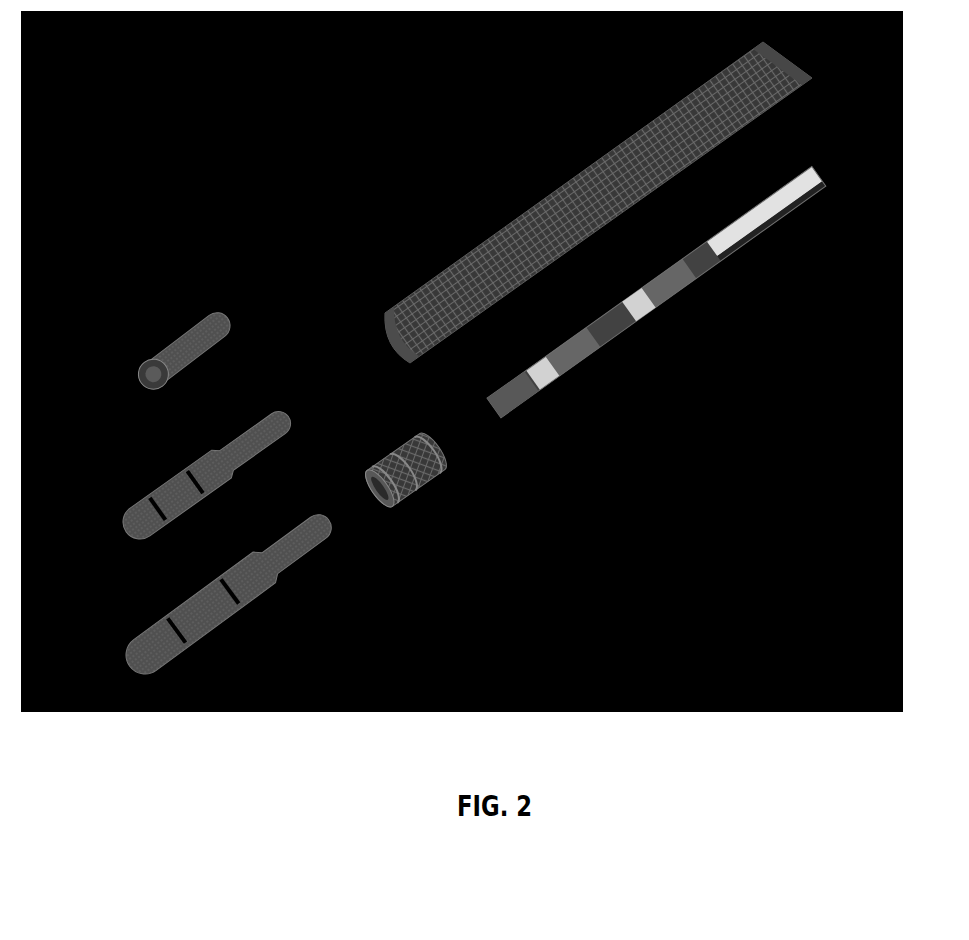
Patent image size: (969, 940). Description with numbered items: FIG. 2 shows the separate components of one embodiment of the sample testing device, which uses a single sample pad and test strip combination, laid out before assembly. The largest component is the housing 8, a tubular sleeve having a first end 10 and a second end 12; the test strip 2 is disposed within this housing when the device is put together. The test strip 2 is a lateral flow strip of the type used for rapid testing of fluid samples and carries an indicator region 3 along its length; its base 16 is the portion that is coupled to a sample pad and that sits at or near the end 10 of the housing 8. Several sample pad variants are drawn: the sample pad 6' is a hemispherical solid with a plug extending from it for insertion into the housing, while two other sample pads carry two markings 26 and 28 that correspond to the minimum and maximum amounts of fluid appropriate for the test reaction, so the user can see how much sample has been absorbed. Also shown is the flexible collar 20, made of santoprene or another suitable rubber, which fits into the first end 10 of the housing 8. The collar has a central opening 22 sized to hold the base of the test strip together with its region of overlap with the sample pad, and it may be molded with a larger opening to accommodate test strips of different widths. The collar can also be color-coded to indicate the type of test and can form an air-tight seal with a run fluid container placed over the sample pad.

The test strip 2 is at (587, 347).
The indicator region 3 is at (633, 325).
The sample pad 6' is at (166, 313).
The housing 8 is at (540, 208).
The end 10 is at (403, 298).
The end 12 is at (738, 58).
The base 16 is at (533, 398).
The flexible collar 20 is at (413, 487).
The opening 22 is at (385, 495).
The marking 26 is at (158, 530).
The marking 28 is at (225, 567).